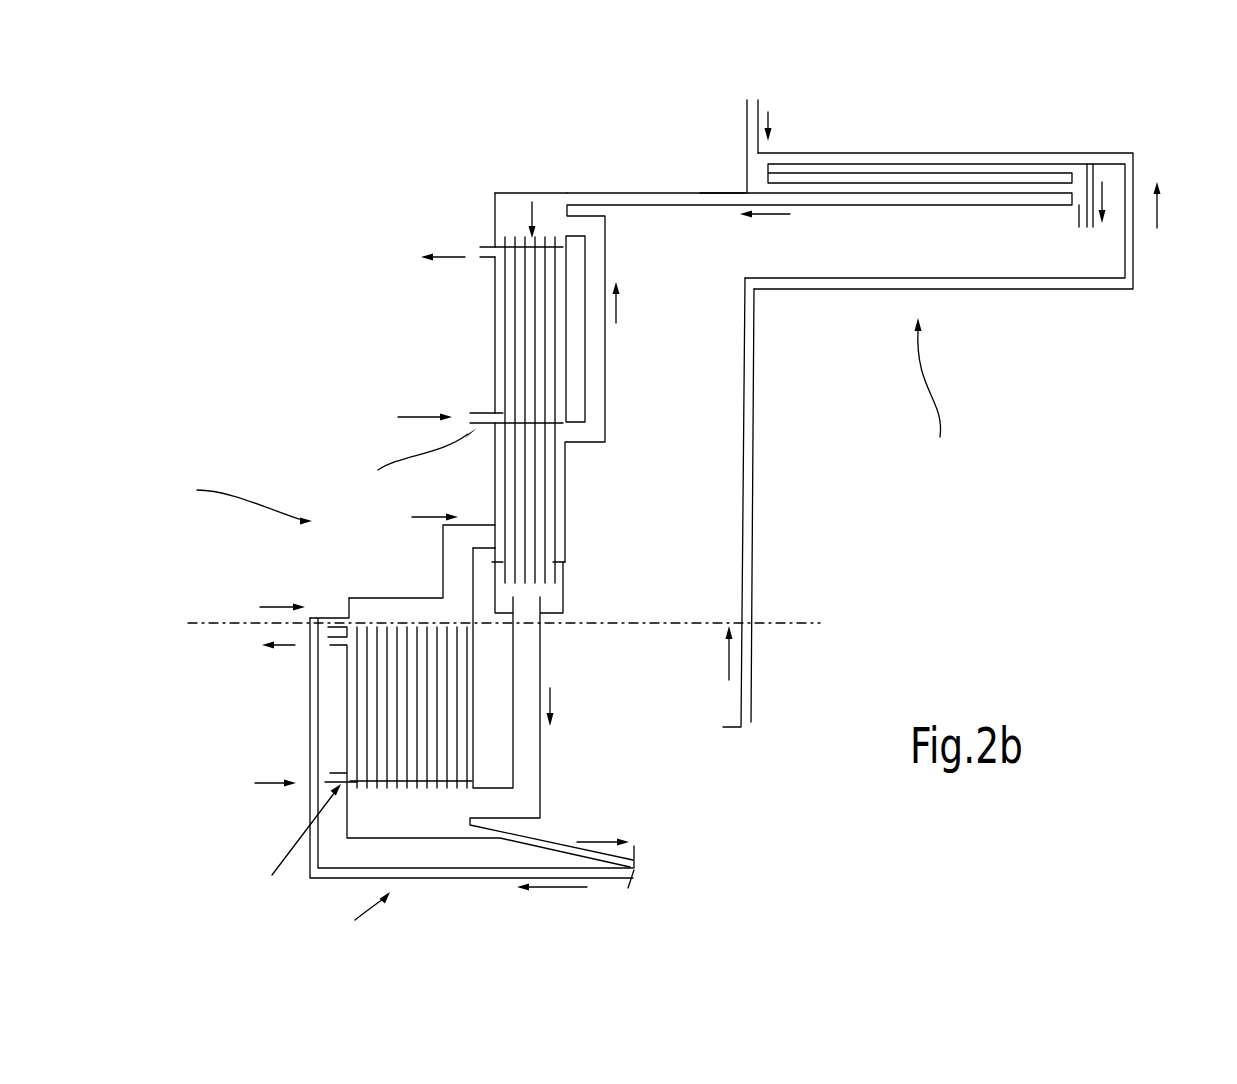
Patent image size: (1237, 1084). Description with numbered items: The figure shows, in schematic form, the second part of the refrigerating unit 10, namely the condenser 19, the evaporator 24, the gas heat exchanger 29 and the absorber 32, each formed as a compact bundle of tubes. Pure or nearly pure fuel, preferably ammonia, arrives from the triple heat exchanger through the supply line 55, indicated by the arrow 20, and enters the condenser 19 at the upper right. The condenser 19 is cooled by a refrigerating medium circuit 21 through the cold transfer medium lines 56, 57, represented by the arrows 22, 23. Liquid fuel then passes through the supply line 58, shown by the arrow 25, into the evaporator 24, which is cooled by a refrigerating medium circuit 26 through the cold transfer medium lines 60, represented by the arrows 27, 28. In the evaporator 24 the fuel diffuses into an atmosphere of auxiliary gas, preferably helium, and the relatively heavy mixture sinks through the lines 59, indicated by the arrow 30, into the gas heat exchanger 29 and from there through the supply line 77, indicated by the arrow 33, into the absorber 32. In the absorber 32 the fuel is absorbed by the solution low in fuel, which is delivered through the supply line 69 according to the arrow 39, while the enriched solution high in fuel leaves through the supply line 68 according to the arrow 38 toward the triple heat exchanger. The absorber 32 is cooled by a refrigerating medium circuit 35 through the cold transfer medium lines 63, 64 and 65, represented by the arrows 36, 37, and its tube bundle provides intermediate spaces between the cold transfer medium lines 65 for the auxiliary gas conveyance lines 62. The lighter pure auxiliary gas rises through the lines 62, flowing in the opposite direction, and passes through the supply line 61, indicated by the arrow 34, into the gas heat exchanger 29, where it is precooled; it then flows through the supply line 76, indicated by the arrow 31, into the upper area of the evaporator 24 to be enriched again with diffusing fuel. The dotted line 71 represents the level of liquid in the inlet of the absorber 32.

The refrigerating unit 10 is at (356, 172).
The condenser 19 is at (939, 310).
The supply line arrow for fuel vapor 20 is at (1160, 210).
The refrigerating medium circuit 21 is at (1081, 173).
The cold transfer medium line arrow 22 is at (770, 110).
The cold transfer medium line arrow 23 is at (1103, 197).
The evaporator 24 is at (312, 352).
The supply line arrow for liquid fuel 25 is at (790, 214).
The refrigerating medium circuit 26 is at (422, 460).
The cold transfer medium line arrow 27 is at (417, 415).
The cold transfer medium line arrow 28 is at (455, 258).
The gas heat exchanger 29 is at (239, 501).
The supply line arrow for gaseous mixture 30 is at (535, 216).
The supply line arrow for precooled auxiliary gas 31 is at (618, 310).
The absorber 32 is at (471, 779).
The supply line arrow for heated gas mixture 33 is at (553, 705).
The supply line arrow for warm auxiliary gas 34 is at (423, 517).
The refrigerating medium circuit 35 is at (297, 842).
The cold transfer medium line arrow 36 is at (268, 788).
The cold transfer medium line arrow 37 is at (285, 655).
The supply line arrow for solution high in fuel 38 is at (585, 840).
The supply line arrow for solution low in fuel 39 is at (283, 596).
The supply line 55 is at (1128, 238).
The cold transfer medium line 56 is at (746, 125).
The cold transfer medium line 57 is at (1077, 207).
The supply line 58 is at (711, 198).
The lines 59 is at (528, 502).
The cold transfer medium lines 60 is at (490, 246).
The supply line 61 is at (555, 543).
The auxiliary gas conveyance lines 62 is at (400, 773).
The cold transfer medium line 63 is at (340, 772).
The cold transfer medium line 64 is at (340, 632).
The cold transfer medium lines 65 is at (467, 683).
The supply line 68 is at (555, 847).
The supply line 69 is at (330, 618).
The dotted line 71 is at (215, 622).
The supply line 76 is at (595, 375).
The supply line 77 is at (530, 655).